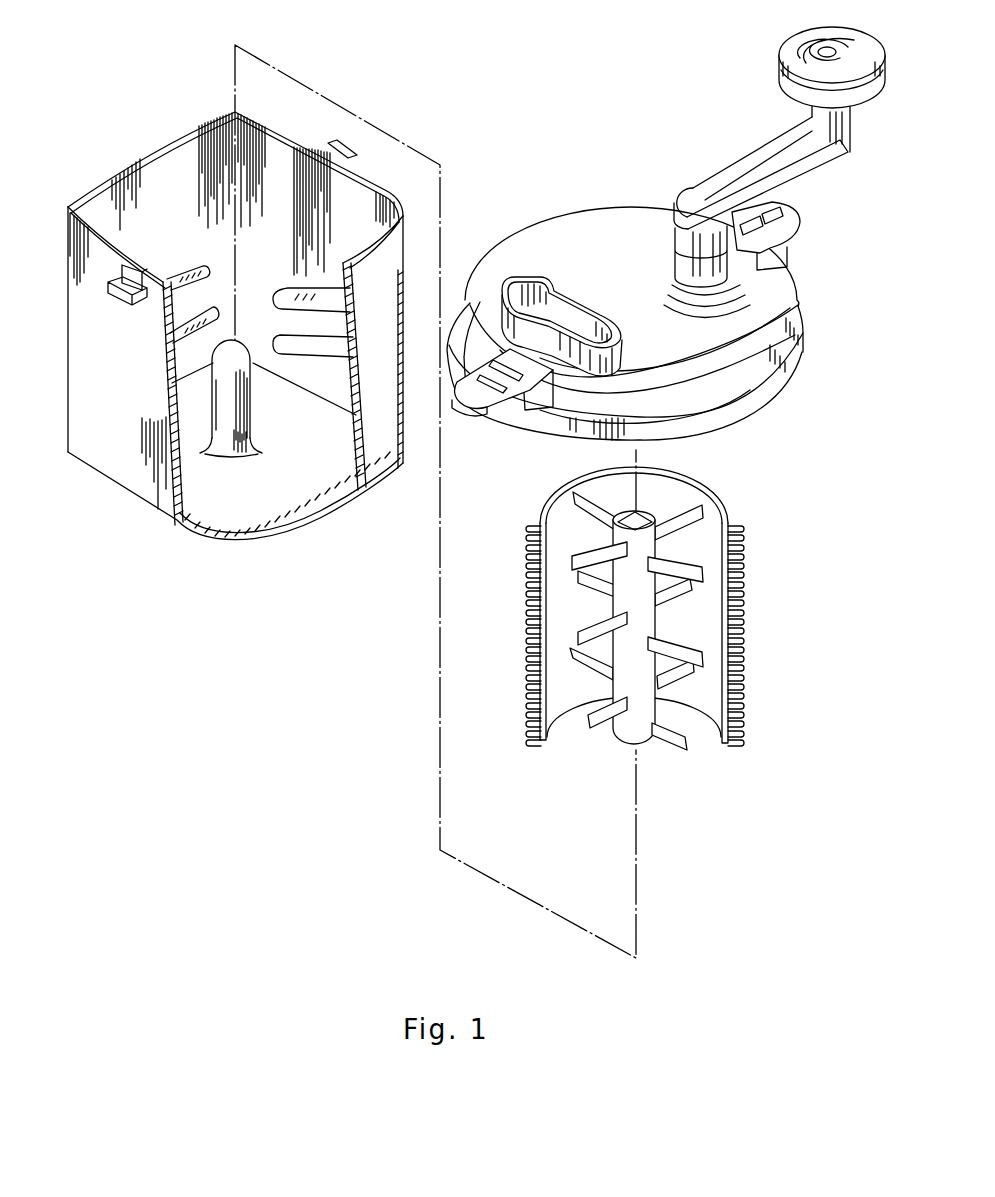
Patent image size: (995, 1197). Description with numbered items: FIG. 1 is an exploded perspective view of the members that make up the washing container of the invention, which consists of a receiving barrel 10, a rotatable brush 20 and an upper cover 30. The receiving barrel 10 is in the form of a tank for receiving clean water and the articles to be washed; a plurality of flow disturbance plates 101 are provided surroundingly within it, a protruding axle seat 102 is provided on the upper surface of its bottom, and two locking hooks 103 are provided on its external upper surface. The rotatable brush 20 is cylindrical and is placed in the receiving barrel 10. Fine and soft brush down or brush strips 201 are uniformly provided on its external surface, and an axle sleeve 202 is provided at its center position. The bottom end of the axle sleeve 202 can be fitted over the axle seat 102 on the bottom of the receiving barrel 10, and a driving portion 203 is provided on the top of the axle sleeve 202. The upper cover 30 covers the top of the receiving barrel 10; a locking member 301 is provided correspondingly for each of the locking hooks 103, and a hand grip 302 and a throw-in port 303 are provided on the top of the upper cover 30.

The receiving barrel 10 is at (120, 495).
The flow disturbance plates 101 is at (188, 265).
The axle seat 102 is at (250, 397).
The locking hooks 103 is at (123, 295).
The rotatable brush 20 is at (680, 631).
The brush strips 201 is at (738, 745).
The axle sleeve 202 is at (613, 740).
The driving portion 203 is at (641, 510).
The upper cover 30 is at (615, 213).
The locking member 301 is at (465, 404).
The hand grip 302 is at (775, 158).
The throw-in port 303 is at (520, 277).